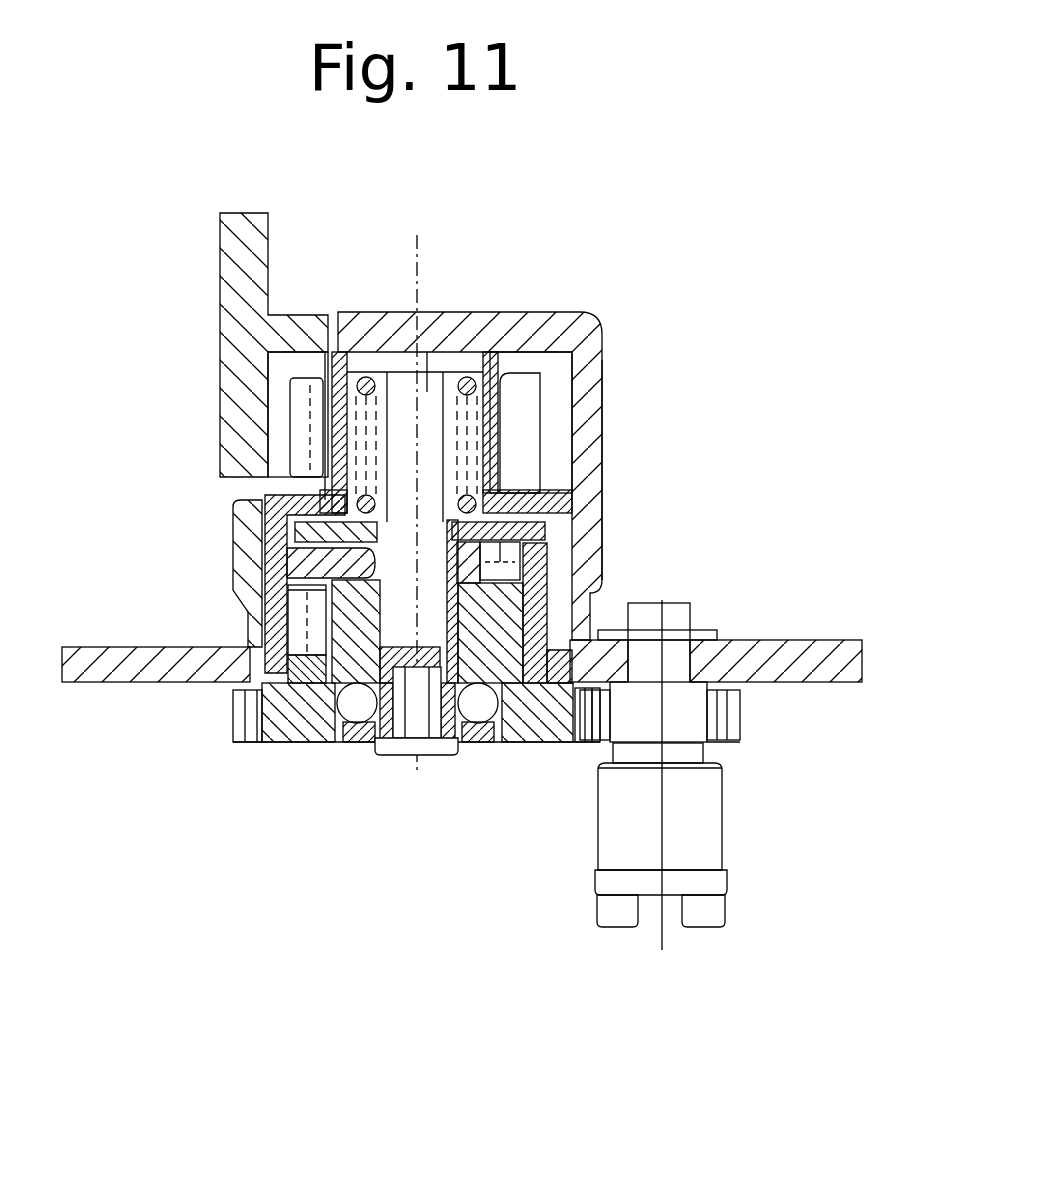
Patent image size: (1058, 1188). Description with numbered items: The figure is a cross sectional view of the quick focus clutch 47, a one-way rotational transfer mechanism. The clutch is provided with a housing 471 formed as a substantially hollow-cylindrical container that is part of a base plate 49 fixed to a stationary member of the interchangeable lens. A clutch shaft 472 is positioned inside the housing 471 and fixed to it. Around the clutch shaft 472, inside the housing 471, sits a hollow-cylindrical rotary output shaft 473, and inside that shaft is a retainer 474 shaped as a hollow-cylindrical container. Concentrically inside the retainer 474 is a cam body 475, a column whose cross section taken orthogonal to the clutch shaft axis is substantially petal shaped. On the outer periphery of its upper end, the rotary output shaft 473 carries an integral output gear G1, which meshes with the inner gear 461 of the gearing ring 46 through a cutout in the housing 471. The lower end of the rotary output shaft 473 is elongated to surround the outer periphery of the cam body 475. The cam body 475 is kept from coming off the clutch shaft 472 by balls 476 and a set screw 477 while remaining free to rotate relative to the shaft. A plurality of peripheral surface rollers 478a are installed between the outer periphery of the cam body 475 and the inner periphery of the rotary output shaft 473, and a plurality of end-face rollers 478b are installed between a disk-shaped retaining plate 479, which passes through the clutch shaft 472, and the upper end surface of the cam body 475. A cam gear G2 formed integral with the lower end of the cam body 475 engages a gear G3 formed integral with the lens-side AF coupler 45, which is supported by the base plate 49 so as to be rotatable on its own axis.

The gearing ring 46 is at (220, 297).
The inner gear 461 is at (285, 370).
The output gear G1 is at (290, 435).
The clutch shaft 472 is at (428, 390).
The quick focus clutch 47 is at (598, 315).
The housing 471 is at (582, 372).
The hollow-cylindrical rotary output shaft 473 is at (505, 450).
The retaining plate 479 is at (540, 493).
The end-face rollers 478b is at (510, 548).
The peripheral surface rollers 478a is at (297, 642).
The retainer 474 is at (598, 628).
The base plate 49 is at (862, 660).
The gear G3 is at (740, 737).
The lens-side AF coupler 45 is at (708, 910).
The cam gear G2 is at (555, 740).
The cam body 475 is at (330, 690).
The balls 476 is at (358, 722).
The set screw 477 is at (432, 748).